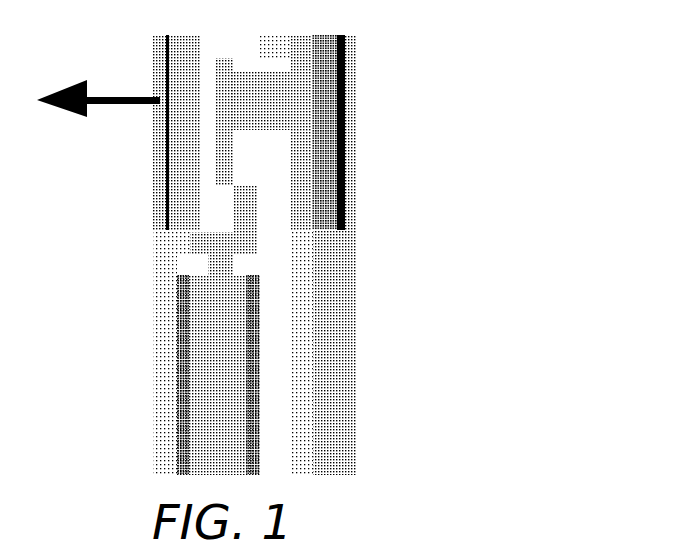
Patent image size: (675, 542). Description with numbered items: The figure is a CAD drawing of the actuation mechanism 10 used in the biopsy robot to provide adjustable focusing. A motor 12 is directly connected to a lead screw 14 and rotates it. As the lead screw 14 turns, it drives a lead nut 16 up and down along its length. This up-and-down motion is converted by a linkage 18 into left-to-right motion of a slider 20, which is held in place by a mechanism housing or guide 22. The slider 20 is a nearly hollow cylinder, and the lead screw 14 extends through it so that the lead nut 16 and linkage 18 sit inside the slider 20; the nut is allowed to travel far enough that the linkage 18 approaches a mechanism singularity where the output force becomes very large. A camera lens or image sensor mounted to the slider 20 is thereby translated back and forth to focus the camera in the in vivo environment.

The actuation mechanism 10 is at (384, 253).
The motor 12 is at (164, 375).
The lead screw 14 is at (168, 254).
The lead nut 16 is at (238, 220).
The linkage 18 is at (276, 222).
The slider 20 is at (252, 121).
The mechanism housing or guide 22 is at (379, 132).